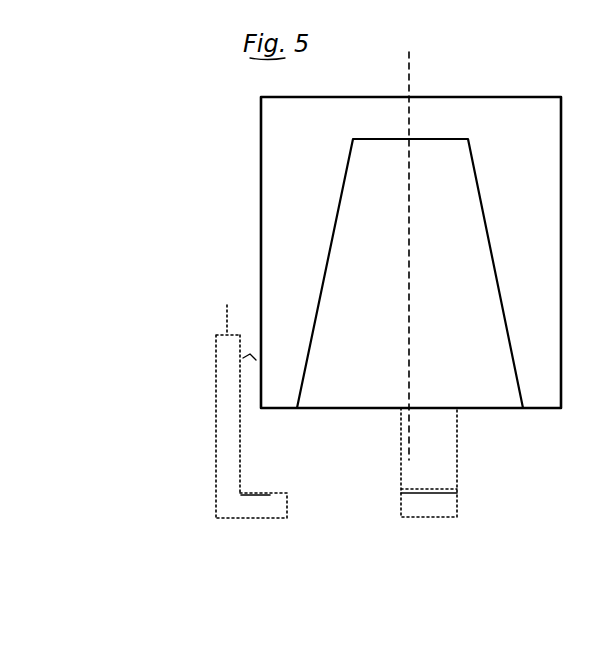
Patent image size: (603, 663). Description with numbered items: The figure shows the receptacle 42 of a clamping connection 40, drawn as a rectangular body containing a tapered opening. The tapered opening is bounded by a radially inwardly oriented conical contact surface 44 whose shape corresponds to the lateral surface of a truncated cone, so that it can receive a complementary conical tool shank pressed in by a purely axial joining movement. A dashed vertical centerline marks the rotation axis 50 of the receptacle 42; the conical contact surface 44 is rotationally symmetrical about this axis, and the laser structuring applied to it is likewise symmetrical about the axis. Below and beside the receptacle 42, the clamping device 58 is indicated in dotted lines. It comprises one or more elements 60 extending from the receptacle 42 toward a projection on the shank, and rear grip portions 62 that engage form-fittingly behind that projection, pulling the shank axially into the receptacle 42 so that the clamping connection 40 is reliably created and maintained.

The clamping connection 40 is at (206, 158).
The receptacle 42 is at (471, 100).
The conical contact surface 44 is at (493, 268).
The rotation axis 50 is at (410, 68).
The clamping device 58 is at (228, 407).
The element 60 is at (260, 510).
The rear grip portion 62 is at (275, 490).